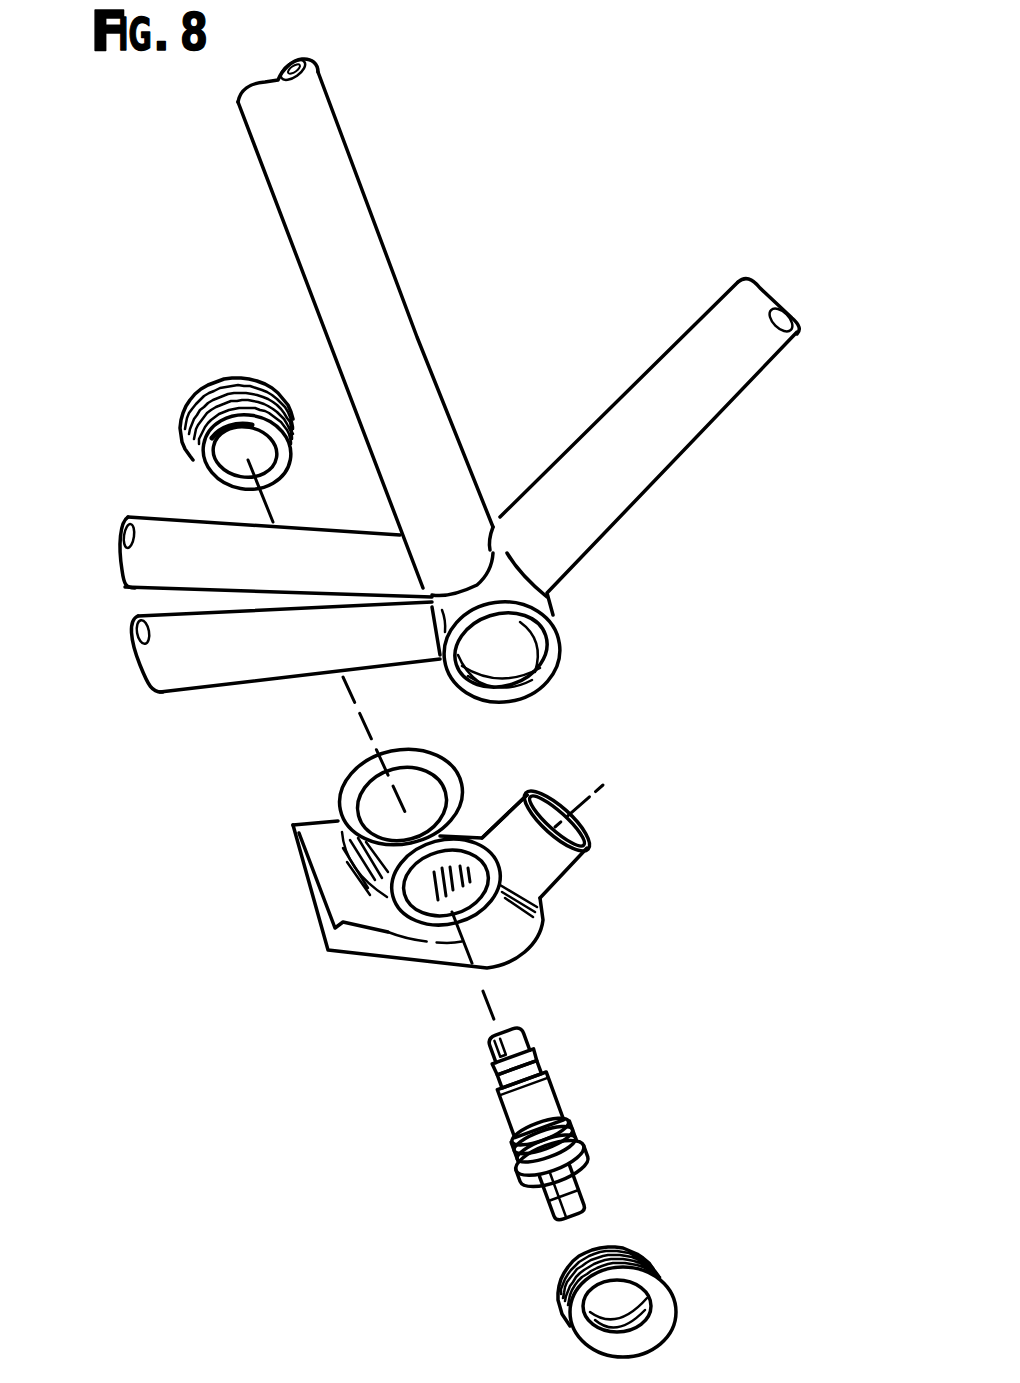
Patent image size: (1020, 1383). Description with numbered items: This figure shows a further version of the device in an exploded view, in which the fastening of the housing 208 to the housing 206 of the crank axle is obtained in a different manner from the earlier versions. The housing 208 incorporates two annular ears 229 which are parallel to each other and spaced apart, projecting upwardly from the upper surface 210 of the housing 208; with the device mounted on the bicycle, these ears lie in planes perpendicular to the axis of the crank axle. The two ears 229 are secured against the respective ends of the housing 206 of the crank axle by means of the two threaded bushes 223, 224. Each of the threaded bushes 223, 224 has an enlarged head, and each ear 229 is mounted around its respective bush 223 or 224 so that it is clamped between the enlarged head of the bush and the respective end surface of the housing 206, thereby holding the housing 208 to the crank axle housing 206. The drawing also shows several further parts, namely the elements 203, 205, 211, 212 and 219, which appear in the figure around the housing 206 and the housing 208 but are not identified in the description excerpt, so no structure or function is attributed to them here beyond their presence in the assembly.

The frame tube 203 is at (388, 255).
The frame tube 205 is at (636, 375).
The housing 206 is at (553, 617).
The housing 208 is at (358, 948).
The upper surface 210 is at (340, 875).
The valve bore 211 is at (410, 897).
The outlet port 212 is at (575, 872).
The valve 219 is at (570, 1109).
The threaded bush 223 is at (667, 1287).
The threaded bush 224 is at (238, 370).
The annular ears 229 is at (487, 840).